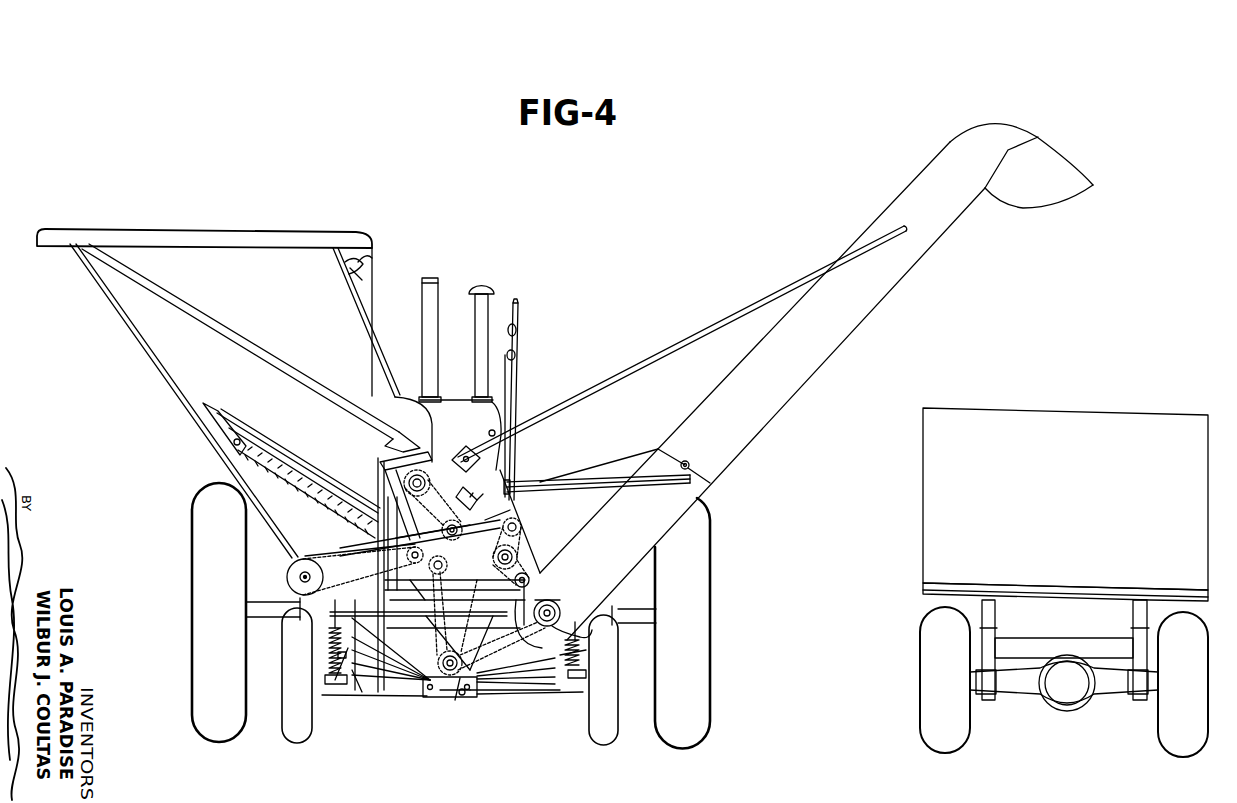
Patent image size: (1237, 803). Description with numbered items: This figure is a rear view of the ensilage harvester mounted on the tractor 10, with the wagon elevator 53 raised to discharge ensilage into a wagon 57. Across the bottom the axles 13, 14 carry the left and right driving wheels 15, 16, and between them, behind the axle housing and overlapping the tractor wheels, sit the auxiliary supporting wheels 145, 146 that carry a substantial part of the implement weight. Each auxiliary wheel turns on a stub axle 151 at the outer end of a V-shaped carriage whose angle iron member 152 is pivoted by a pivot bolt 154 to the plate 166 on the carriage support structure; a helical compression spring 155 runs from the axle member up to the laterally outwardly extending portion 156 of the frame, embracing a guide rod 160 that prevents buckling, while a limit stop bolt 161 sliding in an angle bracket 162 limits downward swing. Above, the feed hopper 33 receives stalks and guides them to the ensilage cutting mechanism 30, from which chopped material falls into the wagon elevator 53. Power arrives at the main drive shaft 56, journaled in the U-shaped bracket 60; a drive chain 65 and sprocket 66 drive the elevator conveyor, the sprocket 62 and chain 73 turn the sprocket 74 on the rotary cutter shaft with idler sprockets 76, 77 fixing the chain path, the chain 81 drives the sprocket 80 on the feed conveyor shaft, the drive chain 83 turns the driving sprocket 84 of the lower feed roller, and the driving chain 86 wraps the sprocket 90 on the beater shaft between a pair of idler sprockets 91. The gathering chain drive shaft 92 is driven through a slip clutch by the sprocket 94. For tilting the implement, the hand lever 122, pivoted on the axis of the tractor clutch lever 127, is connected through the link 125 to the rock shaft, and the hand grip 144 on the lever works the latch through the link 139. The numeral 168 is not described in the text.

The tractor 10 is at (457, 393).
The axle 13 is at (268, 612).
The axle 14 is at (651, 614).
The driving wheel 15 is at (210, 605).
The driving wheel 16 is at (693, 617).
The ensilage cutting mechanism 30 is at (450, 438).
The feed hopper 33 is at (204, 258).
The wagon elevator 53 is at (894, 301).
The main drive shaft 56 is at (461, 697).
The wagon 57 is at (1064, 582).
The U-shaped bracket 60 is at (447, 680).
The sprocket 62 is at (494, 692).
The drive chain 65 is at (514, 692).
The sprocket 66 is at (546, 602).
The chain 73 is at (462, 536).
The sprocket 74 is at (519, 551).
The idler sprocket 76 is at (522, 527).
The idler sprocket 77 is at (535, 575).
The sprocket 80 is at (405, 561).
The chain 81 is at (431, 594).
The drive chain 83 is at (478, 539).
The driving sprocket 84 is at (447, 566).
The driving chain 86 is at (384, 471).
The sprocket 90 is at (431, 483).
The idler sprocket 91 is at (421, 456).
The gathering chain drive shaft 92 is at (300, 578).
The sprocket 94 is at (298, 564).
The hand lever 122 is at (519, 384).
The link 125 is at (515, 461).
The tractor clutch lever 127 is at (468, 452).
The link 139 is at (511, 407).
The hand grip 144 is at (522, 332).
The auxiliary supporting wheel 145 is at (300, 720).
The auxiliary supporting wheel 146 is at (612, 730).
The stub axle 151 is at (328, 679).
The angle iron member 152 is at (372, 692).
The pivot bolt 154 is at (382, 692).
The helical compression spring 155 is at (328, 647).
The laterally outwardly extending portion 156 is at (346, 553).
The guide rod 160 is at (328, 630).
The limit stop bolt 161 is at (335, 682).
The angle bracket 162 is at (360, 692).
The plate 166 is at (437, 702).
The bracket 168 is at (560, 626).